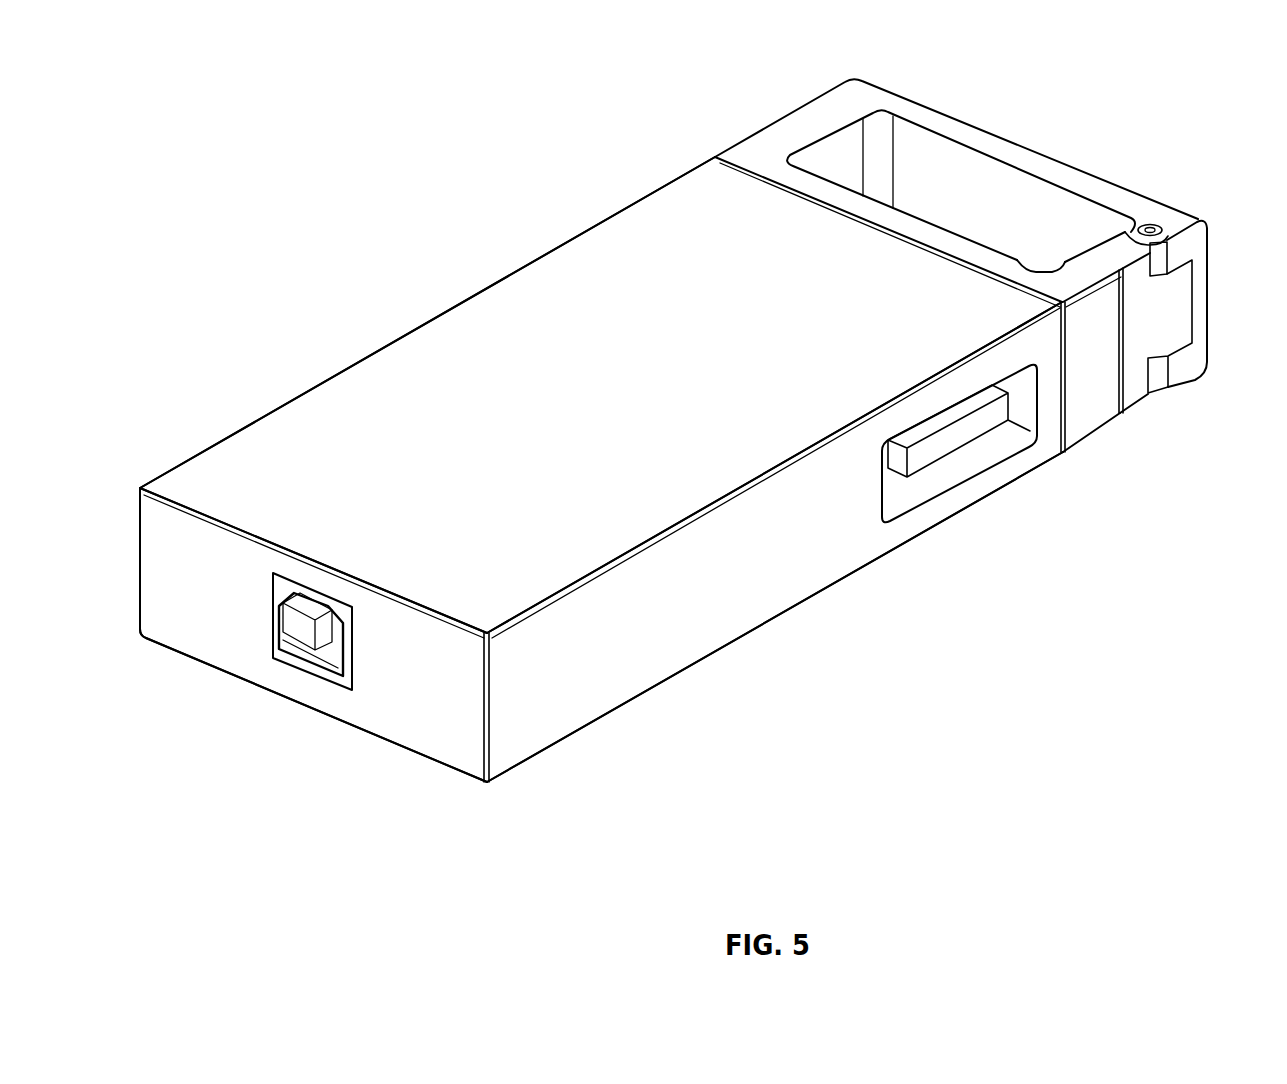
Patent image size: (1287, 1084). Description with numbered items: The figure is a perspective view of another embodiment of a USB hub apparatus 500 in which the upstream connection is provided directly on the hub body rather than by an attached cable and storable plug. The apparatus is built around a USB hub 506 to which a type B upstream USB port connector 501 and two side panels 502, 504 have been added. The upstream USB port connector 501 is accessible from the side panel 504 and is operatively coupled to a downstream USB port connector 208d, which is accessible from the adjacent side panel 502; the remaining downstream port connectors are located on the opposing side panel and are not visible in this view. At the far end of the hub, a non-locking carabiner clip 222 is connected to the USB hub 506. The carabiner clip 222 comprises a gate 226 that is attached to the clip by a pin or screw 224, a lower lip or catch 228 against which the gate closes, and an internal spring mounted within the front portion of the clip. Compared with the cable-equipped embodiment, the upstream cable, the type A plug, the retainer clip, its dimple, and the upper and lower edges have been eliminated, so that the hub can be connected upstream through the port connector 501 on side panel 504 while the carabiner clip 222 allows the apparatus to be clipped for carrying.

The USB hub apparatus 500 is at (238, 218).
The USB hub 506 is at (235, 453).
The side panel 504 is at (377, 725).
The side panel 502 is at (845, 552).
The upstream USB connector 501 is at (270, 640).
The downstream USB port connector 208d is at (1000, 462).
The carabiner clip 222 is at (933, 110).
The pin or screw 224 is at (1153, 225).
The gate 226 is at (1152, 308).
The lower lip or catch 228 is at (1102, 415).